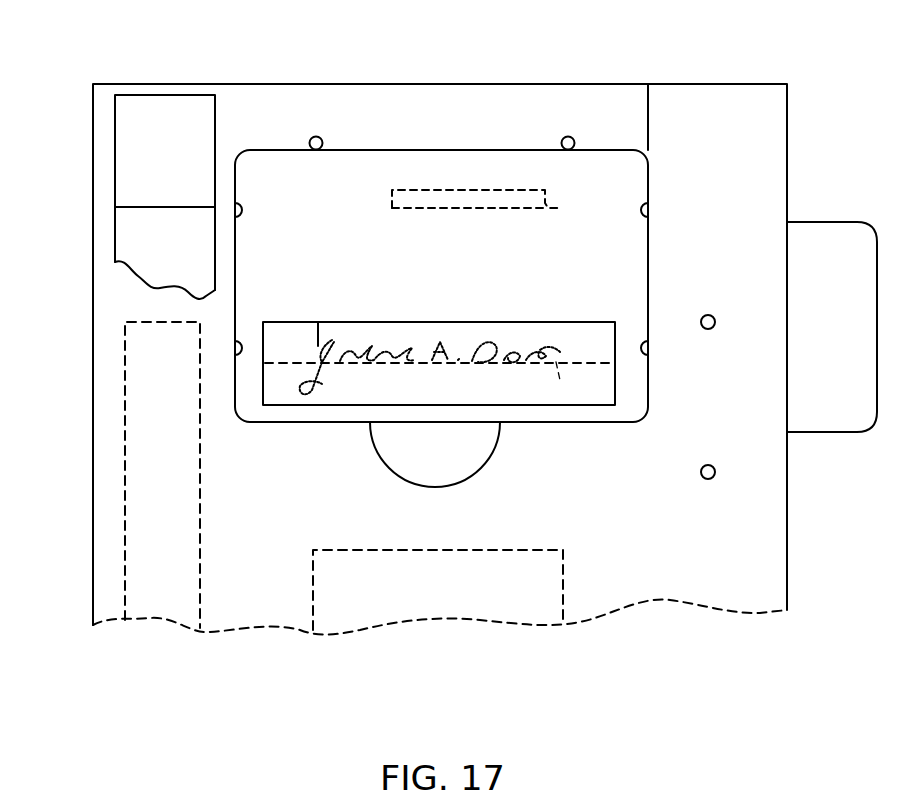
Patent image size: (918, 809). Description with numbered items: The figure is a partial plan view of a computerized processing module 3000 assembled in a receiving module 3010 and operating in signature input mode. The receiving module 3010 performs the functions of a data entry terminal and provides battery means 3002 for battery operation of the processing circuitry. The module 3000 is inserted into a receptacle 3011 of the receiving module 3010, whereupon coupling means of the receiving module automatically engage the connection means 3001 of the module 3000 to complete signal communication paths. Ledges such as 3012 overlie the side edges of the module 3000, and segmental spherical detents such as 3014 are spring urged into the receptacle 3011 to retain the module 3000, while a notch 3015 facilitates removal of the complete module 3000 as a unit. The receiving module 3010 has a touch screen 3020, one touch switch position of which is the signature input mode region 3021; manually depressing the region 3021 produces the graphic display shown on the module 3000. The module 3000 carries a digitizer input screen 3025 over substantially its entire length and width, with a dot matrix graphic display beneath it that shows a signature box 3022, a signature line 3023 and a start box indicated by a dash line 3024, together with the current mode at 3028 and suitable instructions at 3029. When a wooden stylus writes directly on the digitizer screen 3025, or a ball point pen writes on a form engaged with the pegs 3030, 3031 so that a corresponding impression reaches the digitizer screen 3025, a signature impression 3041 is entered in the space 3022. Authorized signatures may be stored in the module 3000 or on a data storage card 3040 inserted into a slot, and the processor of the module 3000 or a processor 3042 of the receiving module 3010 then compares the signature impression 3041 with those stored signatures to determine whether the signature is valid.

The computerized processing module 3000 is at (650, 393).
The connection means 3001 is at (560, 208).
The battery means 3002 is at (312, 592).
The receiving module 3010 is at (787, 578).
The receptacle 3011 is at (648, 122).
The ledge 3012 is at (233, 210).
The segmental spherical detent 3014 is at (315, 136).
The notch 3015 is at (440, 486).
The touch screen 3020 is at (140, 289).
The signature input mode region 3021 is at (115, 103).
The signature box 3022 is at (590, 407).
The signature line 3023 is at (387, 352).
The dash line 3024 is at (322, 350).
The digitizer input screen 3025 is at (396, 150).
The mode display 3028 is at (630, 171).
The instructions 3029 is at (257, 268).
The peg 3030 is at (710, 314).
The peg 3031 is at (714, 477).
The data storage card 3040 is at (877, 370).
The signature impression 3041 is at (556, 360).
The processor 3042 is at (93, 545).